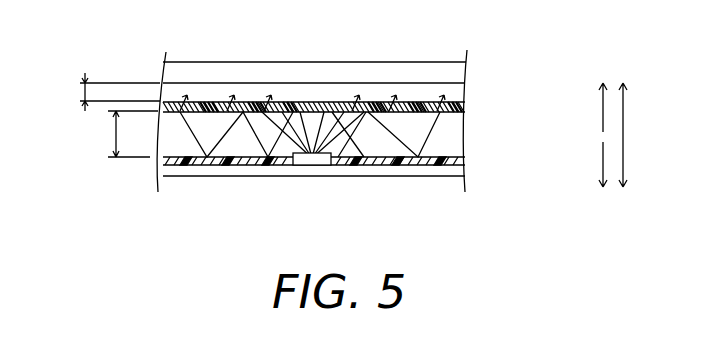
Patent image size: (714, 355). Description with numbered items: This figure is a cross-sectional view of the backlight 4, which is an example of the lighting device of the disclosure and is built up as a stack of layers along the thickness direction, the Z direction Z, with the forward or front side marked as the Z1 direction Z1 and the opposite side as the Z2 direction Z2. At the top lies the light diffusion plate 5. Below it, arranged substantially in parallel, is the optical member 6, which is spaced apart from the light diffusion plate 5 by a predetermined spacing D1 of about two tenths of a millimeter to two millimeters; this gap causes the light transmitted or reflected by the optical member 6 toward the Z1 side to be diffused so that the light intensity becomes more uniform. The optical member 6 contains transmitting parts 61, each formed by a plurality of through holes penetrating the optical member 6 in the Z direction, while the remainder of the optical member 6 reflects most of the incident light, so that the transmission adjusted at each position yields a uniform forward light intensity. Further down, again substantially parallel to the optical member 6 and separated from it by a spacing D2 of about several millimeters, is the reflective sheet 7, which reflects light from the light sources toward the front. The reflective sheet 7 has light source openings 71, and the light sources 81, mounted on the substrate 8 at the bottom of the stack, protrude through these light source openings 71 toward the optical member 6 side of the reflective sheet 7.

The backlight 4 is at (514, 50).
The light diffusion plate 5 is at (466, 77).
The optical member 6 is at (466, 105).
The transmitting parts 61 is at (350, 101).
The reflective sheet 7 is at (466, 160).
The light source openings 71 is at (294, 166).
The substrate 8 is at (466, 172).
The light sources 81 is at (320, 161).
The spacing D1 is at (105, 92).
The spacing D2 is at (122, 134).
The Z1 direction Z1 is at (591, 107).
The Z2 direction Z2 is at (591, 164).
The Z direction Z is at (633, 135).